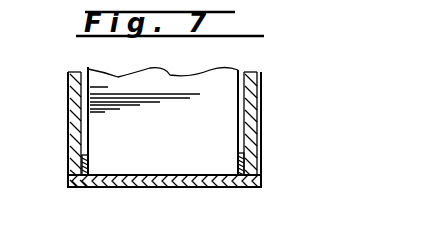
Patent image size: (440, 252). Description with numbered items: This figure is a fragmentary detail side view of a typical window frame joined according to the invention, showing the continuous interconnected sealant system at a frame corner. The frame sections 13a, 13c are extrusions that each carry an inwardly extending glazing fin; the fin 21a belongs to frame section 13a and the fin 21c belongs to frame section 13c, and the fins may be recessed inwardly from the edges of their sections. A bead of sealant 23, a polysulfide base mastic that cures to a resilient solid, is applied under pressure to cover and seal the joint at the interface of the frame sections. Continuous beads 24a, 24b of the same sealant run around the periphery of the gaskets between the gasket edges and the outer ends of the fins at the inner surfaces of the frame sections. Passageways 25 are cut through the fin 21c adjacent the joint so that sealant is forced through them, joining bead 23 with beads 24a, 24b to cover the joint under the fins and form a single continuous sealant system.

The continuous bead of sealant 24a is at (72, 131).
The continuous bead of sealant 24b is at (256, 126).
The bead of sealant 23 is at (170, 188).
The frame section 13a is at (207, 188).
The passageway 25 is at (87, 188).
The glazing fin 21a is at (85, 165).
The glazing fin 21c is at (238, 94).
The frame section 13c is at (187, 140).